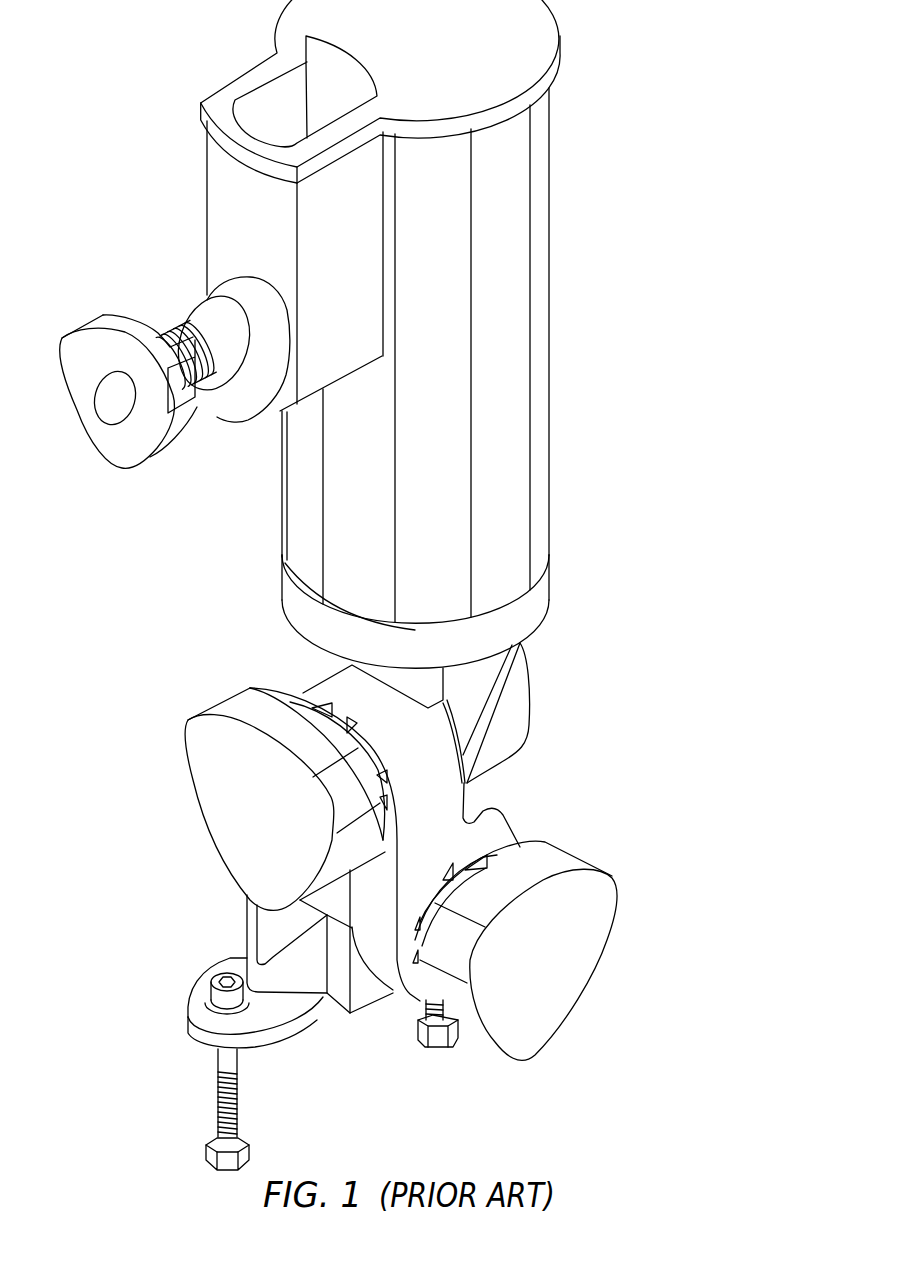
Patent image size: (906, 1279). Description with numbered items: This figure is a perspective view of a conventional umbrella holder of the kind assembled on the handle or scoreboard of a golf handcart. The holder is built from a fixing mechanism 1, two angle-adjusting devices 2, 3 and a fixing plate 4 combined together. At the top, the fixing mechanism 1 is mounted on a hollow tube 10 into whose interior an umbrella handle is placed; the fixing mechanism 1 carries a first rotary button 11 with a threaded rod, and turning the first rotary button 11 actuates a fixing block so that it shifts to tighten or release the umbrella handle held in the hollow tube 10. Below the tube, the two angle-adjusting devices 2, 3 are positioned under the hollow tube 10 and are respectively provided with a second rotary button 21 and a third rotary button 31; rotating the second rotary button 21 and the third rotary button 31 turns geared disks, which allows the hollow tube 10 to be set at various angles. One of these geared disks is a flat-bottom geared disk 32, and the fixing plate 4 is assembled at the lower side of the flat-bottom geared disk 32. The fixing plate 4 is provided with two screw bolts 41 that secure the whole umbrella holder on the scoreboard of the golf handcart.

The fixing mechanism 1 is at (143, 288).
The hollow tube 10 is at (538, 310).
The first rotary button 11 is at (120, 450).
The angle-adjusting device 2 is at (287, 670).
The second rotary button 21 is at (220, 787).
The angle-adjusting device 3 is at (537, 812).
The third rotary button 31 is at (577, 958).
The flat-bottom geared disk 32 is at (247, 930).
The fixing plate 4 is at (187, 988).
The screw bolt 41 is at (213, 1107).